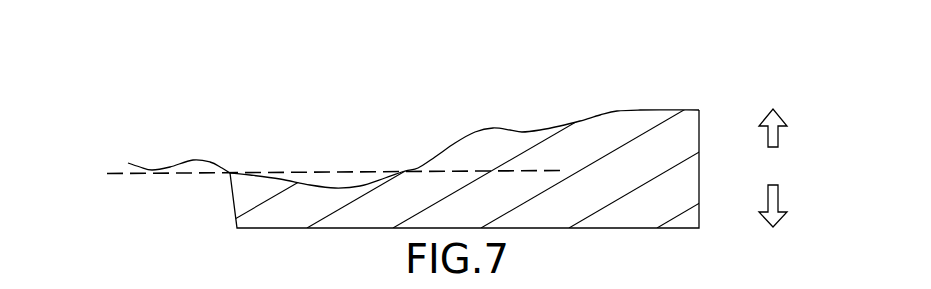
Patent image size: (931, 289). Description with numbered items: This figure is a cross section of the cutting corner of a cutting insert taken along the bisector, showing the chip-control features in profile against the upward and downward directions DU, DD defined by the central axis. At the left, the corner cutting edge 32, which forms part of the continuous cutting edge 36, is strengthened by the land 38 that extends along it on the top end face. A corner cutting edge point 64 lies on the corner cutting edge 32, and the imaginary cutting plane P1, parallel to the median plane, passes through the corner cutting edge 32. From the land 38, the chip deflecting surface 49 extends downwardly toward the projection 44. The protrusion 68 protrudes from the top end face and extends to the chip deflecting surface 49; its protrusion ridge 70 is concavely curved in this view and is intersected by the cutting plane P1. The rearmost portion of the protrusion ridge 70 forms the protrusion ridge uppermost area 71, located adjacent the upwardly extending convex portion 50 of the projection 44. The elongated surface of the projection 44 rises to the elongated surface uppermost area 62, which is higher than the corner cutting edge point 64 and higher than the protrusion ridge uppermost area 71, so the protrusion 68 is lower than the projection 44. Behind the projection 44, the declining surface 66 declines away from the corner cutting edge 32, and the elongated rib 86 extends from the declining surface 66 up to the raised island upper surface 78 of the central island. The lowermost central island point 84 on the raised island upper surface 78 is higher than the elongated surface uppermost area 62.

The corner cutting edge 32 is at (390, 141).
The continuous cutting edge 36 is at (145, 159).
The land 38 is at (245, 173).
The projection 44 is at (473, 85).
The chip deflecting surface 49 is at (277, 172).
The upwardly extending convex portion 50 is at (465, 137).
The elongated surface uppermost area 62 is at (493, 128).
The corner cutting edge point 64 is at (230, 172).
The declining surface 66 is at (520, 133).
The protrusion 68 is at (398, 170).
The protrusion ridge 70 is at (417, 170).
The protrusion ridge uppermost area 71 is at (447, 147).
The raised island upper surface 78 is at (673, 110).
The lowermost central island point 84 is at (640, 110).
The elongated rib 86 is at (582, 117).
The imaginary cutting plane P1 is at (155, 177).
The upward direction DU is at (788, 128).
The downward direction DD is at (788, 206).